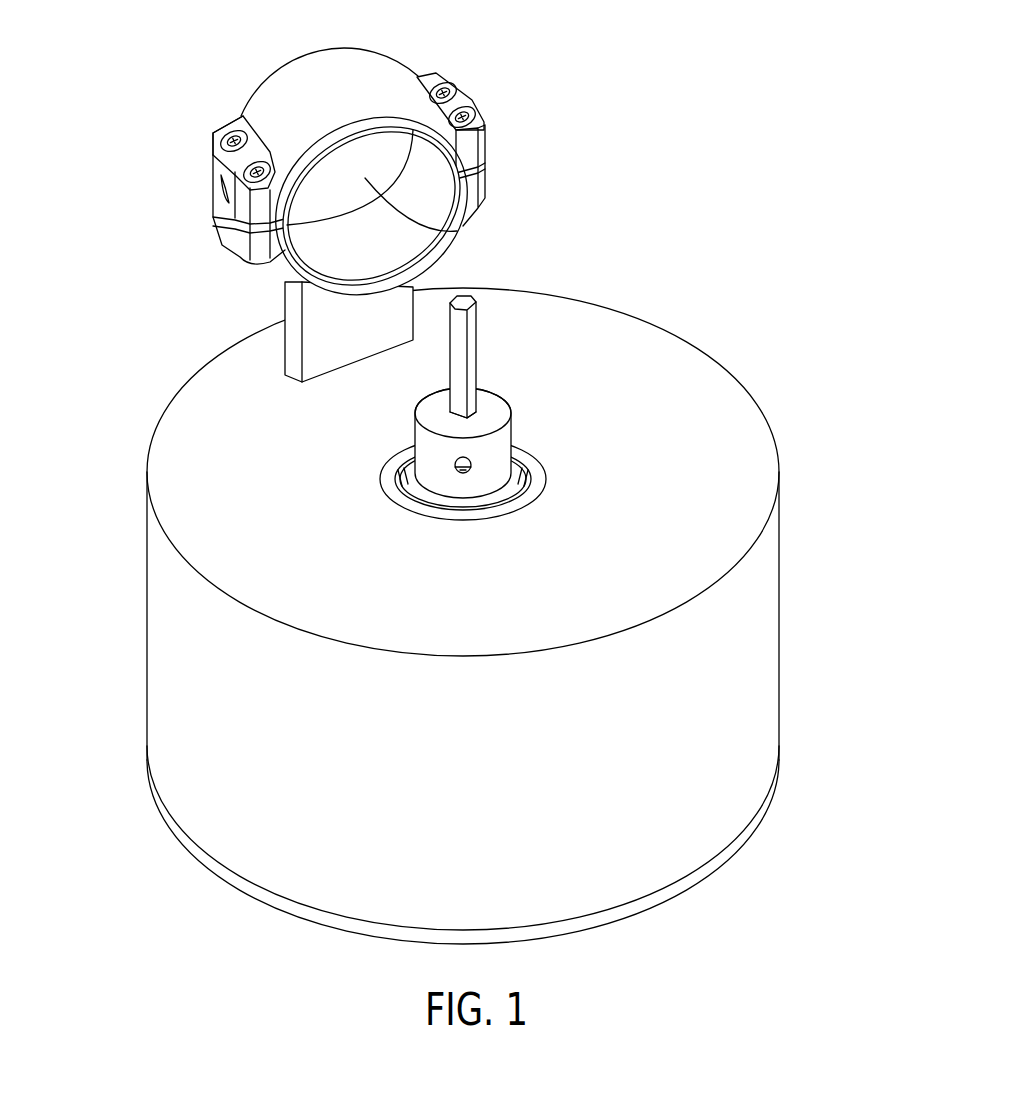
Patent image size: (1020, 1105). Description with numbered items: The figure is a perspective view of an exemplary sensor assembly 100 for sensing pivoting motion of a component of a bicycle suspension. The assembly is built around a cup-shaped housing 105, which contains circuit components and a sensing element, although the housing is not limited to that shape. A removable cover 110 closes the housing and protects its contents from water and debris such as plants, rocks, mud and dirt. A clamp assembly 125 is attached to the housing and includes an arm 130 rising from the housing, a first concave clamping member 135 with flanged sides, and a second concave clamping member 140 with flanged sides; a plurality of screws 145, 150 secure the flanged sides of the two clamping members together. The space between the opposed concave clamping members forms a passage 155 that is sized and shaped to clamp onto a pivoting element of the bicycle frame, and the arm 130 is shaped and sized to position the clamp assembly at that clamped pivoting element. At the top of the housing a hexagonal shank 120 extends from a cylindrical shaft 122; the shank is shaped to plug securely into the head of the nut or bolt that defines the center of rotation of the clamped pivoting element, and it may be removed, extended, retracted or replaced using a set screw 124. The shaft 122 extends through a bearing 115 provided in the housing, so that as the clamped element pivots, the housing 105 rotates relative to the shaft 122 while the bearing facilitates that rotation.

The sensor assembly 100 is at (476, 495).
The housing 105 is at (638, 340).
The removable cover 110 is at (192, 850).
The bearing 115 is at (400, 478).
The shank 120 is at (471, 336).
The cylindrical shaft 122 is at (502, 444).
The set screw 124 is at (458, 472).
The clamp assembly 125 is at (359, 188).
The arm 130 is at (288, 300).
The first concave clamping member 135 is at (230, 233).
The second concave clamping member 140 is at (211, 169).
The screw 145 is at (485, 95).
The screw 150 is at (462, 80).
The passage 155 is at (472, 232).